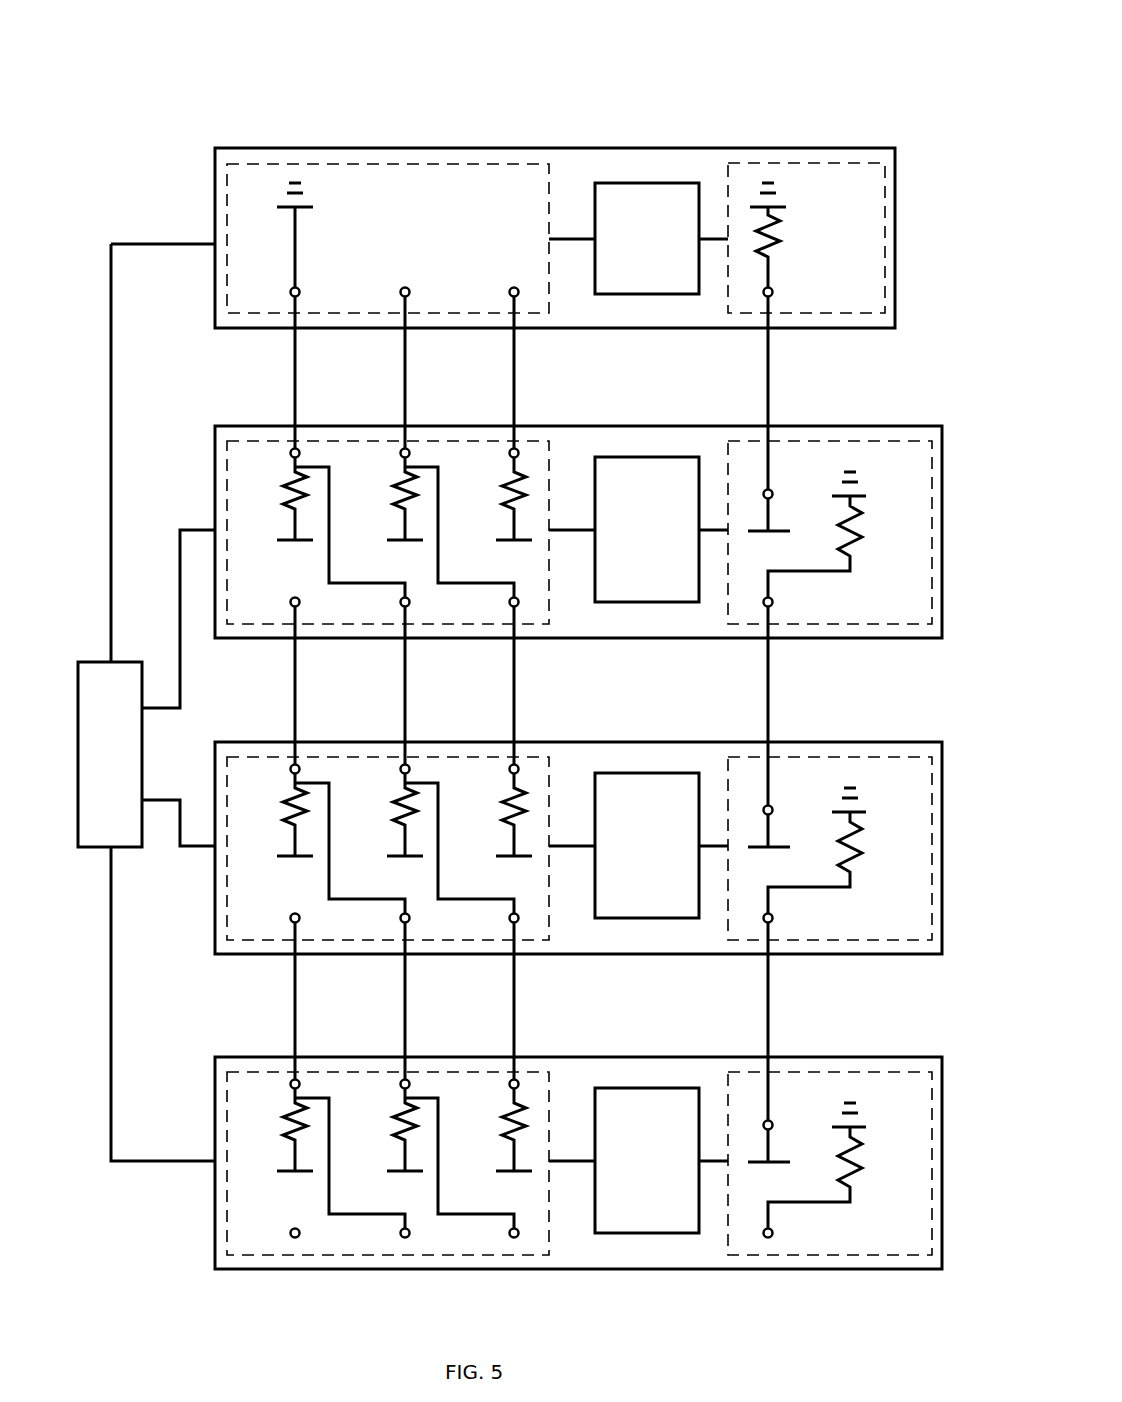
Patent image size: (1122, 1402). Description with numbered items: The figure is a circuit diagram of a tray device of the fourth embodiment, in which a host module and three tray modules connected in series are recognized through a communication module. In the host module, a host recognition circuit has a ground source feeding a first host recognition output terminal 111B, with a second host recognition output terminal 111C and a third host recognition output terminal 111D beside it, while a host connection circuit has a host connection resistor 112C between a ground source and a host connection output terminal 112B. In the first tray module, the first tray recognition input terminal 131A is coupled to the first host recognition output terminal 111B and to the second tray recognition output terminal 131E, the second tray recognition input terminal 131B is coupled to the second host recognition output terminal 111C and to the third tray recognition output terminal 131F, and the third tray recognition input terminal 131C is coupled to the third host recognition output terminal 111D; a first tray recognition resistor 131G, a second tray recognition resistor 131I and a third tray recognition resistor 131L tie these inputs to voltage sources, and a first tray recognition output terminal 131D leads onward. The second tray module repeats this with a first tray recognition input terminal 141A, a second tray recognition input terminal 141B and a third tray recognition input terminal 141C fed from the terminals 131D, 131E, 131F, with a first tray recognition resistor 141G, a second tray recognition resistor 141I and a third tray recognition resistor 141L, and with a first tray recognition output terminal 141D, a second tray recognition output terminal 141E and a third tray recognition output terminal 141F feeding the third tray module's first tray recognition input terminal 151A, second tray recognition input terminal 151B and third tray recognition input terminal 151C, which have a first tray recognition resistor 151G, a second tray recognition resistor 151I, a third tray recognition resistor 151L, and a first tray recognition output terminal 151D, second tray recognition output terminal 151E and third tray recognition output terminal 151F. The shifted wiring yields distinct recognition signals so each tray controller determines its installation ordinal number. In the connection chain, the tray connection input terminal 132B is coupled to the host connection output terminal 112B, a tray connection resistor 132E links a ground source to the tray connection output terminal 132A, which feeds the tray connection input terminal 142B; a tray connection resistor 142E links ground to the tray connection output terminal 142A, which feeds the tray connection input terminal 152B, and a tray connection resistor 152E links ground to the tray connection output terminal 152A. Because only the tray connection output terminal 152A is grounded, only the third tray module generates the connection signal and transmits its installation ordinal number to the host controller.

The first host recognition output terminal 111B is at (299, 288).
The second host recognition output terminal 111C is at (418, 270).
The third host recognition output terminal 111D is at (514, 286).
The host connection output terminal 112B is at (773, 292).
The host connection resistor 112C is at (782, 240).
The first tray recognition input terminal 131A is at (292, 450).
The second tray recognition input terminal 131B is at (402, 450).
The third tray recognition input terminal 131C is at (511, 450).
The first tray recognition output terminal 131D is at (290, 604).
The second tray recognition output terminal 131E is at (401, 602).
The third tray recognition output terminal 131F is at (510, 602).
The first tray recognition resistor 131G is at (284, 490).
The second tray recognition resistor 131I is at (394, 490).
The third tray recognition resistor 131L is at (503, 490).
The tray connection output terminal 132A is at (773, 602).
The tray connection input terminal 132B is at (772, 492).
The tray connection resistor 132E is at (862, 534).
The first tray recognition input terminal 141A is at (265, 744).
The second tray recognition input terminal 141B is at (375, 744).
The third tray recognition input terminal 141C is at (484, 744).
The first tray recognition output terminal 141D is at (264, 911).
The second tray recognition output terminal 141E is at (352, 856).
The third tray recognition output terminal 141F is at (462, 856).
The first tray recognition resistor 141G is at (268, 813).
The second tray recognition resistor 141I is at (381, 813).
The third tray recognition resistor 141L is at (490, 813).
The tray connection output terminal 142A is at (806, 919).
The tray connection input terminal 142B is at (797, 807).
The tray connection resistor 142E is at (840, 863).
The first tray recognition input terminal 151A is at (265, 1059).
The second tray recognition input terminal 151B is at (375, 1059).
The third tray recognition input terminal 151C is at (484, 1059).
The first tray recognition output terminal 151D is at (264, 1226).
The second tray recognition output terminal 151E is at (352, 1171).
The third tray recognition output terminal 151F is at (462, 1171).
The first tray recognition resistor 151G is at (268, 1128).
The second tray recognition resistor 151I is at (381, 1128).
The third tray recognition resistor 151L is at (490, 1128).
The tray connection output terminal 152A is at (806, 1234).
The tray connection input terminal 152B is at (797, 1122).
The tray connection resistor 152E is at (840, 1178).